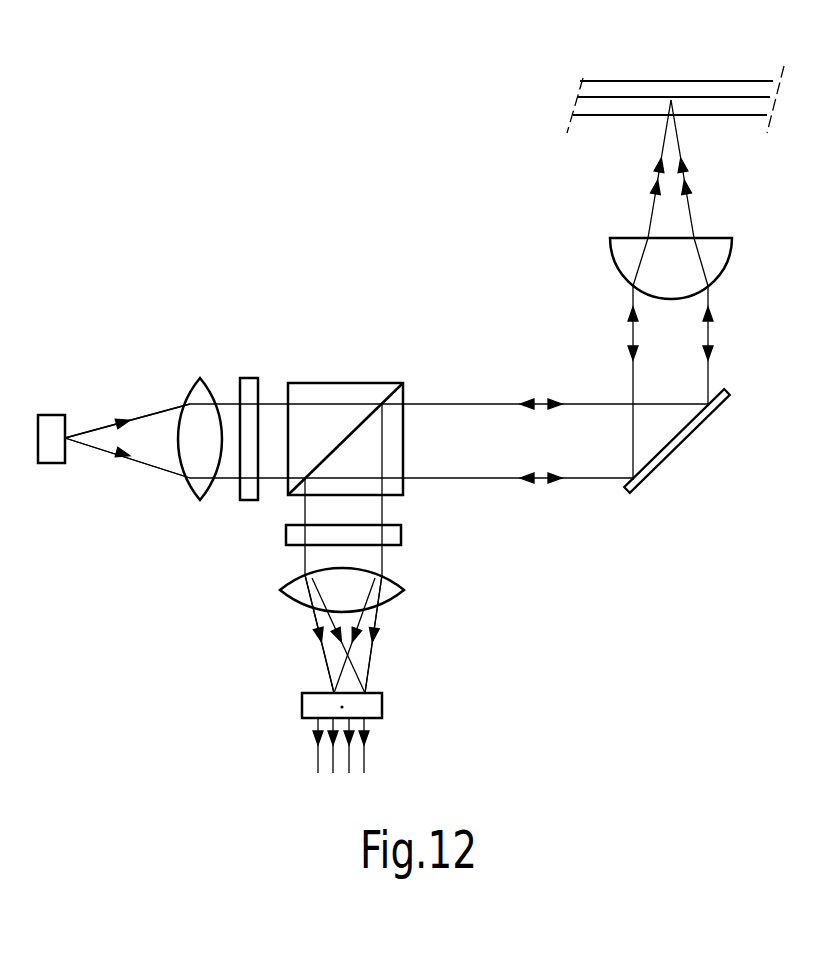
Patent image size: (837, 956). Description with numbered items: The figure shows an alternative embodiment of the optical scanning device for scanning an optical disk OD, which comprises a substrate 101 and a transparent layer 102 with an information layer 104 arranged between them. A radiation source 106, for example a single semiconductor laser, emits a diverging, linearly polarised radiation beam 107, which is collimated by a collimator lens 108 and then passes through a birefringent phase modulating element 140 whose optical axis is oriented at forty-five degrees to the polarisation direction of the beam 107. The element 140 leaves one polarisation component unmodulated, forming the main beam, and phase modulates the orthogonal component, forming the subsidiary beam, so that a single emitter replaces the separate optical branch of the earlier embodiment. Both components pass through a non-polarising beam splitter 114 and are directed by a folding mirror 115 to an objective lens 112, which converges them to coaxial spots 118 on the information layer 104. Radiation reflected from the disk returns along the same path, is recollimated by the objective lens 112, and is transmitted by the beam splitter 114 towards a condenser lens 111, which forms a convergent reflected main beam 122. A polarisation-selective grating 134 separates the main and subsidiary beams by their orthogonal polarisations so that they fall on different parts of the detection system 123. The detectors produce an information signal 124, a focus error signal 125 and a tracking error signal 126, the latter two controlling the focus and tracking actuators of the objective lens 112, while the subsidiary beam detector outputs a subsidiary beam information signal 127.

The optical disk OD is at (572, 76).
The substrate 101 is at (770, 90).
The transparent layer 102 is at (598, 105).
The information layer 104 is at (628, 98).
The spot 118 is at (676, 100).
The radiation source 106 is at (50, 465).
The linearly polarised radiation beam 107 is at (136, 418).
The collimator lens 108 is at (195, 382).
The birefringent phase modulating element 140 is at (248, 378).
The non-polarising beam splitter 114 is at (350, 383).
The folding mirror 115 is at (728, 396).
The objective lens 112 is at (732, 262).
The polarisation-selective grating 134 is at (402, 533).
The condenser lens 111 is at (283, 586).
The convergent reflected main beam 122 is at (316, 642).
The detection systems 123 is at (302, 708).
The information signal 124 is at (316, 760).
The focus error signal 125 is at (331, 762).
The tracking error signal 126 is at (351, 762).
The subsidiary beam information signal 127 is at (366, 760).